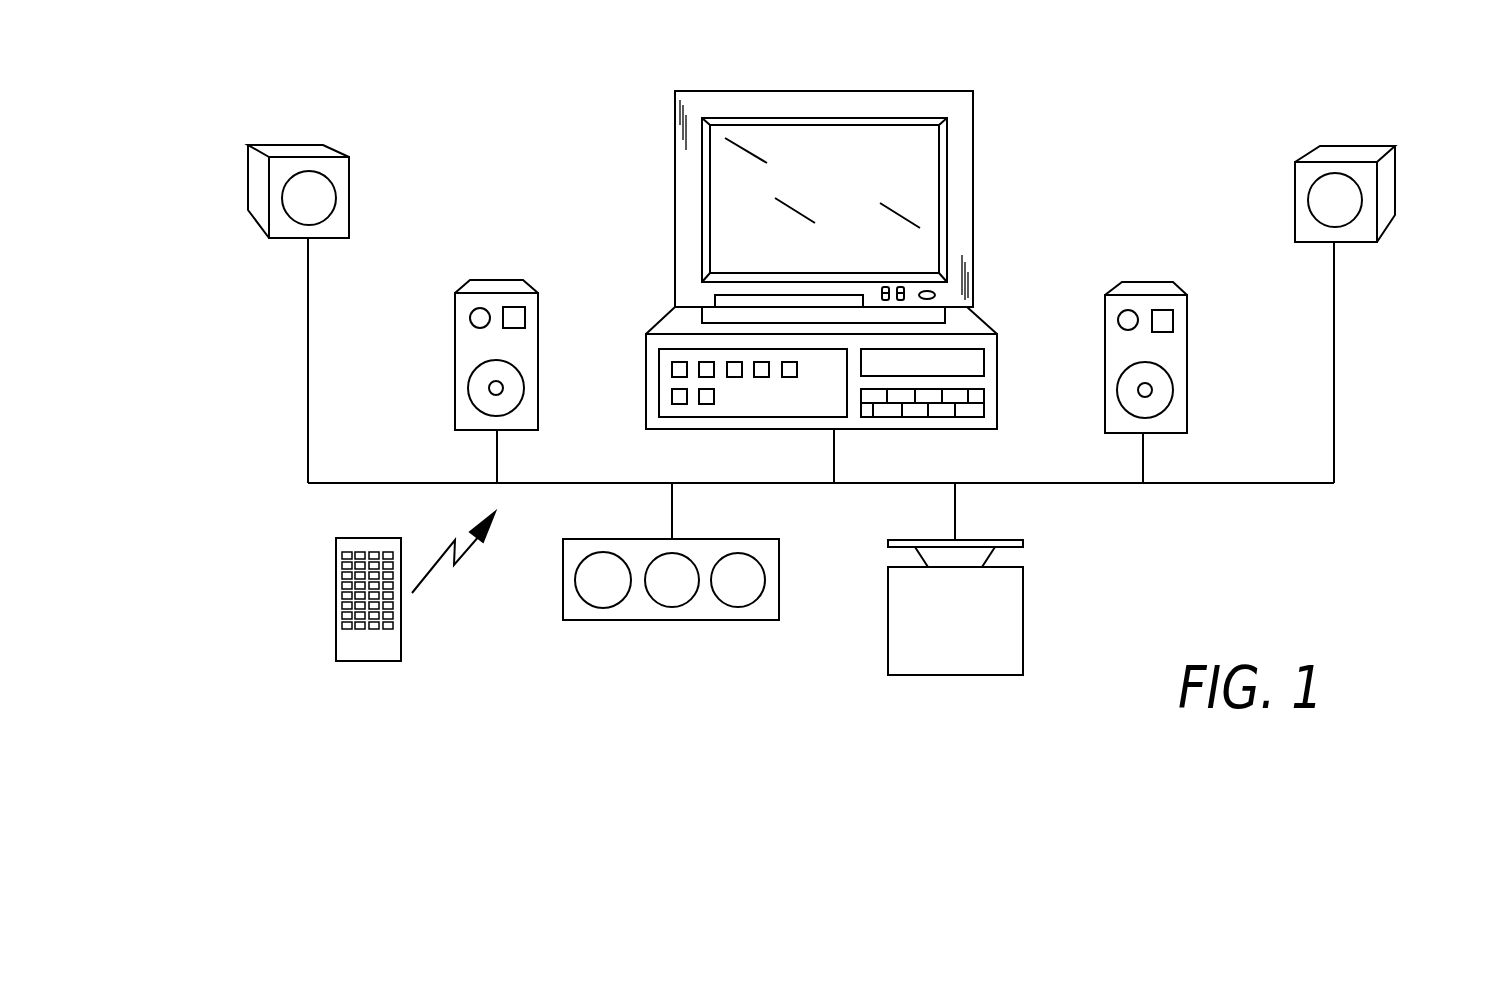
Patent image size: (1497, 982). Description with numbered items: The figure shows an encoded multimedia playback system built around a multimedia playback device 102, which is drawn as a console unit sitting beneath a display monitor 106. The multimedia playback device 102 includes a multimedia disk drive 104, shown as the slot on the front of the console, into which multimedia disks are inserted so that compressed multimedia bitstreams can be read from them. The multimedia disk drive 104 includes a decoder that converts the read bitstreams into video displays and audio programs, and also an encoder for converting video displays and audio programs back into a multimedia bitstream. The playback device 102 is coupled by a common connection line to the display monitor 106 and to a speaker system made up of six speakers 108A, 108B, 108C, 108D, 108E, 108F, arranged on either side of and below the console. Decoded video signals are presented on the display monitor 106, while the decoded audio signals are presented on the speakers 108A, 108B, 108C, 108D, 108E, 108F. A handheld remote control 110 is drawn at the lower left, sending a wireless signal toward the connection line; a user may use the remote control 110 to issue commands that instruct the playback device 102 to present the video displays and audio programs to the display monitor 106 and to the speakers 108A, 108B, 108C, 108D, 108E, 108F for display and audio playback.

The multimedia playback device 102 is at (713, 433).
The multimedia disk drive 104 is at (970, 350).
The display monitor 106 is at (825, 91).
The speaker 108A is at (283, 240).
The speaker 108B is at (498, 280).
The speaker 108C is at (657, 620).
The speaker 108D is at (953, 677).
The speaker 108E is at (1148, 280).
The speaker 108F is at (1363, 242).
The remote control 110 is at (357, 662).